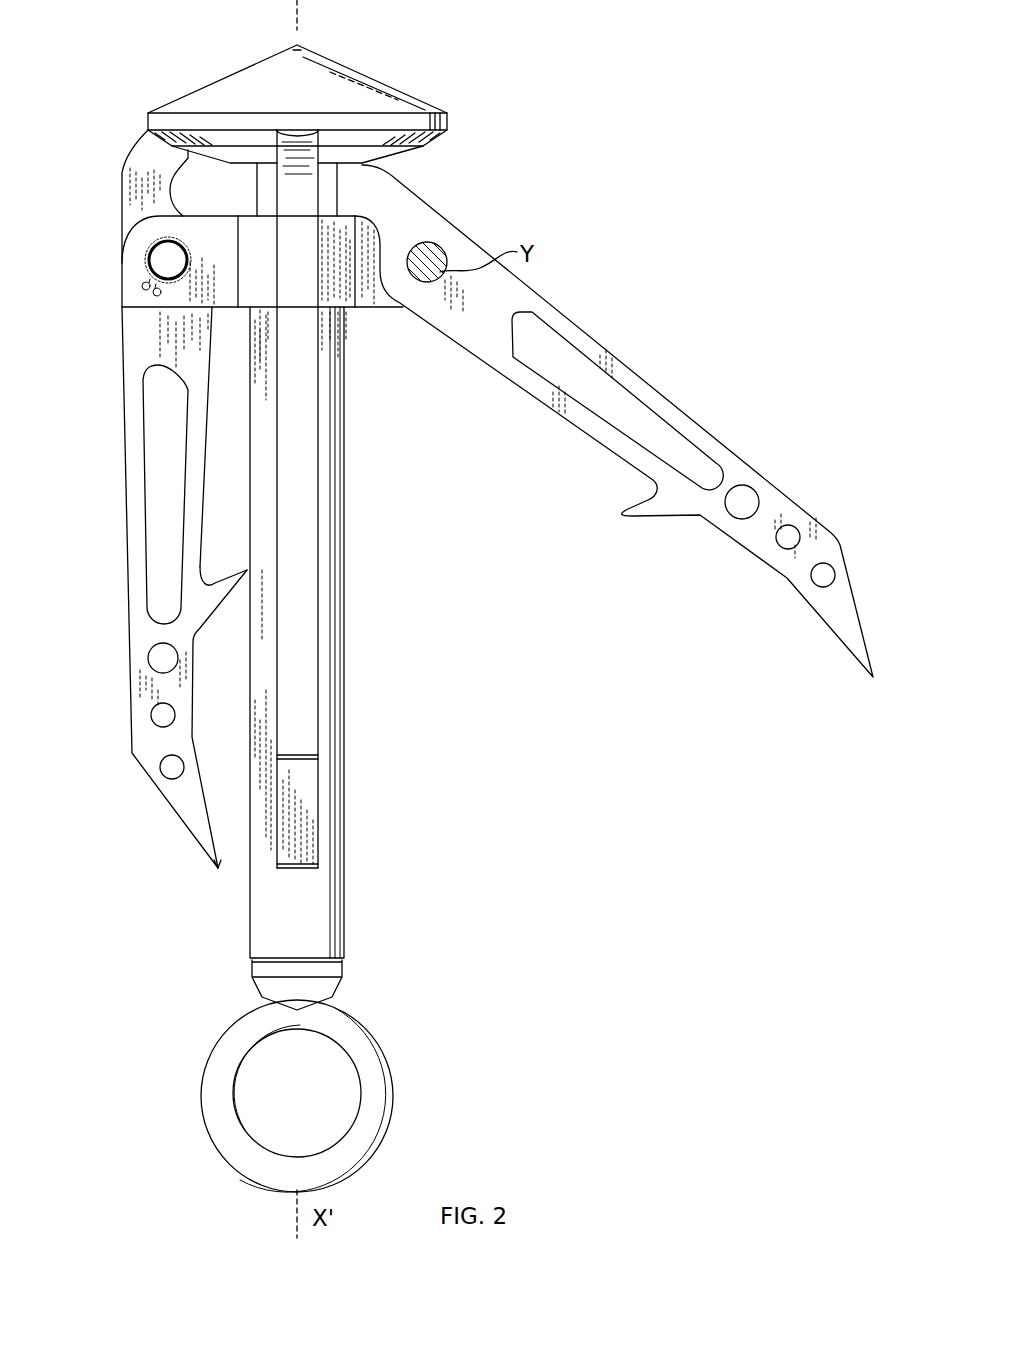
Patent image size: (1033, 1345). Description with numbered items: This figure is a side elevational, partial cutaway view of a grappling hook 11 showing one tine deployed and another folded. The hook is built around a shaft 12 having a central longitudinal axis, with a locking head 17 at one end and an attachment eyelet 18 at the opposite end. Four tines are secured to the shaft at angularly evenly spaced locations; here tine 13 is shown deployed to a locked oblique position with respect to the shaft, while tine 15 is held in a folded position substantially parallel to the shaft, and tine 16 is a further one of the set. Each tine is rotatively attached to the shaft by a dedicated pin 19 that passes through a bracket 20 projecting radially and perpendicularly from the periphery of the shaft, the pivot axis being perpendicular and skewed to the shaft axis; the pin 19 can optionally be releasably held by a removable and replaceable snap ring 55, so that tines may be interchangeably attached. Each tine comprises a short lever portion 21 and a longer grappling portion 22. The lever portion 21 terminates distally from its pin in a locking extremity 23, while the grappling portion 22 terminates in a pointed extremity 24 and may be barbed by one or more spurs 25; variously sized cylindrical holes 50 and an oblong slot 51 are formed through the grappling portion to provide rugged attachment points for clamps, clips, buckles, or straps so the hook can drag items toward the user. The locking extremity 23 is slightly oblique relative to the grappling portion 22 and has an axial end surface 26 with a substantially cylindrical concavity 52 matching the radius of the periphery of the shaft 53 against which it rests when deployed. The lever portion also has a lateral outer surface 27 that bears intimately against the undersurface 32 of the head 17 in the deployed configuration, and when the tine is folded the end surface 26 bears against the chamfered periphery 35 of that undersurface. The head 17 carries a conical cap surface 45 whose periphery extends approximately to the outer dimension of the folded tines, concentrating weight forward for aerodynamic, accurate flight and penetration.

The multipurpose tool 11 is at (592, 78).
The shaft 12 is at (345, 588).
The tine 13 is at (640, 375).
The tine 15 is at (131, 612).
The tine 16 is at (320, 814).
The locking head 17 is at (347, 65).
The attachment eyelet 18 is at (393, 1078).
The pin 19 is at (153, 263).
The bracket 20 is at (357, 307).
The lever portion 21 is at (123, 214).
The grappling portion 22 is at (183, 690).
The locking extremity 23 is at (123, 174).
The pointed extremity 24 is at (216, 868).
The spur 25 is at (244, 570).
The axial end surface 26 is at (188, 158).
The lateral outer surface 27 is at (148, 132).
The undersurface 32 is at (425, 166).
The chamfered periphery 35 is at (447, 133).
The conical cap surface 45 is at (293, 55).
The cylindrical holes 50 is at (160, 760).
The oblong slot 51 is at (145, 523).
The cylindrical concavity 52 is at (300, 134).
The periphery of the shaft 53 is at (337, 194).
The snap ring 55 is at (145, 287).